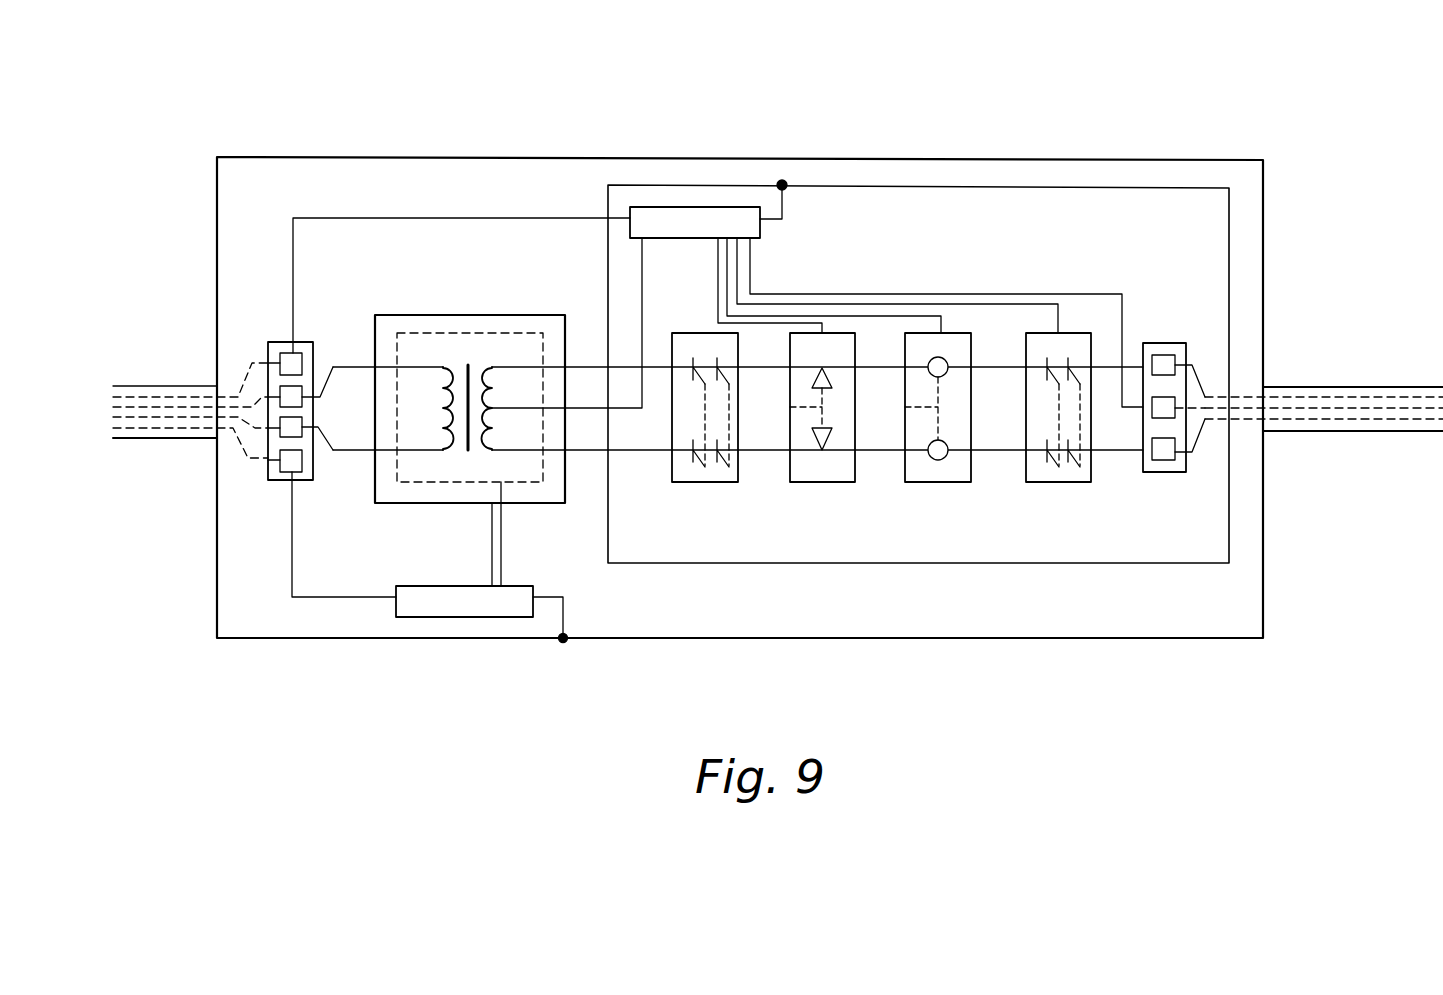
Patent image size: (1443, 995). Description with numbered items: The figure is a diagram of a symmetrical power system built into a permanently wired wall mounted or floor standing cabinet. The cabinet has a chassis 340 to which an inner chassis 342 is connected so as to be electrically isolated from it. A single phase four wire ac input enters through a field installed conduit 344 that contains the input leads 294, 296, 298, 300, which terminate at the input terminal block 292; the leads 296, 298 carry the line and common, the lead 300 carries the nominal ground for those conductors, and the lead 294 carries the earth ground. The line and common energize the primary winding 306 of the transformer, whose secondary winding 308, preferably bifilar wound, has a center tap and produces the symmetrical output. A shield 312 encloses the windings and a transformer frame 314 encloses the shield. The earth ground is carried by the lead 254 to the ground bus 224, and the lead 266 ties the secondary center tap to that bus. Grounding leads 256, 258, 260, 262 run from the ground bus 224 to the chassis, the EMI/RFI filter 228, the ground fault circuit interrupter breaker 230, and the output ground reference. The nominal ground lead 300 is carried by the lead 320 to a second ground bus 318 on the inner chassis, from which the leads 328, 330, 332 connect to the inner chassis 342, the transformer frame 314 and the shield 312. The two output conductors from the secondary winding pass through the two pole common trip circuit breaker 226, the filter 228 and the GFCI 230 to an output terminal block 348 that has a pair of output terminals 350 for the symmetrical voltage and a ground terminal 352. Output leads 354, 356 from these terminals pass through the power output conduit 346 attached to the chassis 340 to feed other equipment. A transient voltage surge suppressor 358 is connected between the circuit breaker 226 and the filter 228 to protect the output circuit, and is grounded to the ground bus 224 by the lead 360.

The ground bus 224 is at (698, 207).
The 2 pole circuit breaker of the common trip type 226 is at (707, 484).
The EMI/RFI filter 228 is at (950, 484).
The ground fault circuit interrupter breaker of the common trip type 230 is at (1063, 484).
The lead 254 is at (293, 232).
The grounding lead 256 is at (787, 200).
The grounding lead 258 is at (915, 316).
The grounding lead 260 is at (1007, 304).
The grounding lead 262 is at (1089, 293).
The lead 266 is at (642, 268).
The input terminal block 292 is at (281, 341).
The input lead 294 is at (120, 385).
The input lead 296 is at (180, 396).
The input lead 298 is at (145, 418).
The input lead 300 is at (190, 429).
The primary winding 306 is at (441, 365).
The secondary winding 308 is at (504, 365).
The shield 312 is at (473, 333).
The transformer frame 314 is at (457, 315).
The second ground bus 318 is at (475, 619).
The lead 320 is at (292, 571).
The lead 328 is at (563, 620).
The lead 330 is at (490, 532).
The lead 332 is at (502, 545).
The chassis 340 is at (1212, 159).
The inner chassis 342 is at (1218, 187).
The field installed conduit 344 is at (170, 440).
The power output conduit 346 is at (1302, 433).
The output terminal block 348 is at (1162, 343).
The output terminals 350 is at (1170, 357).
The ground terminal 352 is at (1175, 397).
The output leads 354 is at (1305, 398).
The output lead 356 is at (1367, 408).
The transient voltage surge suppressor 358 is at (831, 484).
The lead 360 is at (800, 323).